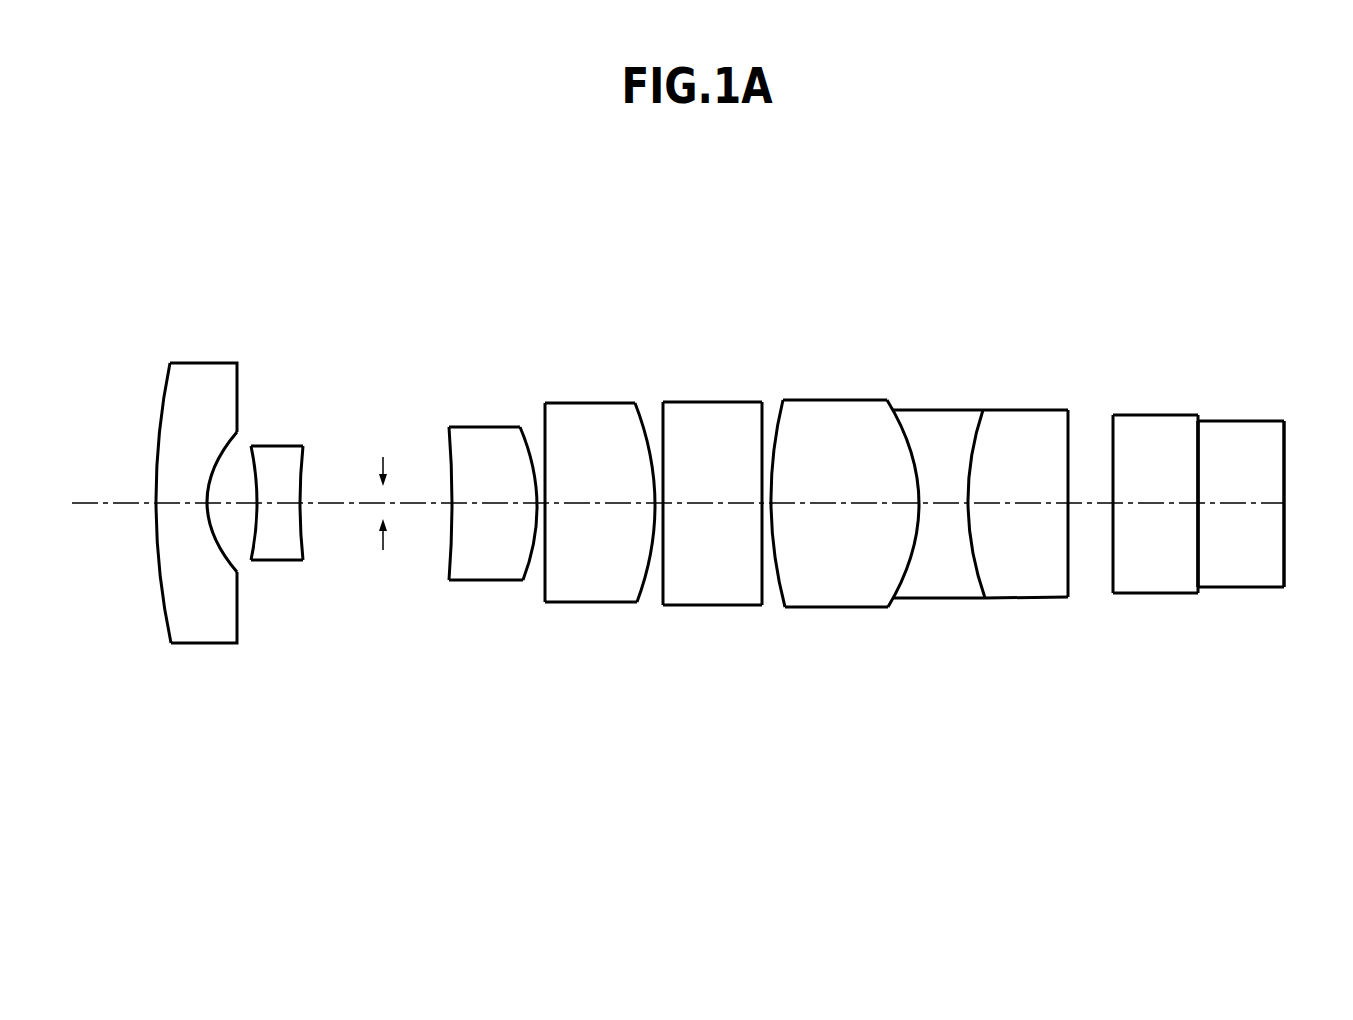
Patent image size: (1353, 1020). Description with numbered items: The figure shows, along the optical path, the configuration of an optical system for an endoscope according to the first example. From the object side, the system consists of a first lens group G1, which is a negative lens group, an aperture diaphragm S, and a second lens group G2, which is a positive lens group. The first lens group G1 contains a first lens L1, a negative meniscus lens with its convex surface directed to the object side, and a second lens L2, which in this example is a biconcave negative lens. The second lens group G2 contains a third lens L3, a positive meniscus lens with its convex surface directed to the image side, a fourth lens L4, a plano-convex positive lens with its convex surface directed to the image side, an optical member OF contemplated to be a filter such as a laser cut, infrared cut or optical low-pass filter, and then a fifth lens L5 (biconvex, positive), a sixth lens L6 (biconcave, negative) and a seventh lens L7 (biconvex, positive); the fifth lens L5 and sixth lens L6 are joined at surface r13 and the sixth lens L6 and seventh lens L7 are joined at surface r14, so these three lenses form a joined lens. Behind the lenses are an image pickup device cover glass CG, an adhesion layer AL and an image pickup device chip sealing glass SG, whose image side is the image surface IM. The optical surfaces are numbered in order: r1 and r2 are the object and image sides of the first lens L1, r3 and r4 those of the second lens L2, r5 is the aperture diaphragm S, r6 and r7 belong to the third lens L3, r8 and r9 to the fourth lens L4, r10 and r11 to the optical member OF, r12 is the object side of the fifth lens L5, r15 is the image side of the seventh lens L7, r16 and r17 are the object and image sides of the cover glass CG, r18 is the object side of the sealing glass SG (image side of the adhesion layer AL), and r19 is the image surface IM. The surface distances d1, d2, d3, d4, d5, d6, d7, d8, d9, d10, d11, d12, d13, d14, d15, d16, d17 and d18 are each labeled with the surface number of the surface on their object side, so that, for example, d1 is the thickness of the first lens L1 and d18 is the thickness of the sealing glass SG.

The first lens group G1 is at (298, 257).
The second lens group G2 is at (448, 257).
The first lens L1 is at (182, 362).
The second lens L2 is at (277, 446).
The third lens L3 is at (473, 427).
The fourth lens L4 is at (590, 403).
The fifth lens L5 is at (837, 400).
The sixth lens L6 is at (925, 410).
The seventh lens L7 is at (1010, 410).
The optical member OF is at (712, 402).
The aperture diaphragm S is at (383, 457).
The image pickup device cover glass CG is at (1153, 415).
The adhesion layer AL is at (1198, 415).
The image pickup device chip sealing glass SG is at (1242, 421).
The image surface IM is at (1284, 433).
The object side surface of the first lens r1 is at (164, 392).
The image side surface of the first lens r2 is at (230, 443).
The object side surface of the second lens r3 is at (250, 466).
The image side surface of the second lens r4 is at (306, 473).
The aperture diaphragm surface r5 is at (381, 483).
The object side surface of the third lens r6 is at (450, 470).
The image side surface of the third lens r7 is at (533, 469).
The object side surface of the fourth lens r8 is at (546, 456).
The image side surface of the fourth lens r9 is at (654, 456).
The object side surface of the optical member r10 is at (664, 450).
The image side surface of the optical member r11 is at (761, 450).
The object side surface of the fifth lens r12 is at (781, 453).
The joining surface between the fifth lens and the sixth lens r13 is at (907, 457).
The joining surface between the sixth lens and the seventh lens r14 is at (971, 447).
The image side surface of the seventh lens r15 is at (1067, 449).
The object side surface of the cover glass r16 is at (1114, 447).
The image side surface of the cover glass r17 is at (1197, 447).
The object side surface of the chip sealing glass r18 is at (1200, 460).
The image surface r19 is at (1283, 460).
The surface distance d1 is at (187, 503).
The surface distance d2 is at (238, 503).
The surface distance d3 is at (278, 503).
The surface distance d4 is at (343, 503).
The surface distance d5 is at (420, 503).
The surface distance d6 is at (492, 503).
The surface distance d7 is at (540, 503).
The surface distance d8 is at (595, 503).
The surface distance d9 is at (658, 503).
The surface distance d10 is at (710, 503).
The surface distance d11 is at (768, 503).
The surface distance d12 is at (842, 503).
The surface distance d13 is at (943, 503).
The surface distance d14 is at (1023, 503).
The surface distance d15 is at (1093, 503).
The surface distance d16 is at (1157, 503).
The surface distance d17 is at (1198, 503).
The surface distance d18 is at (1245, 503).